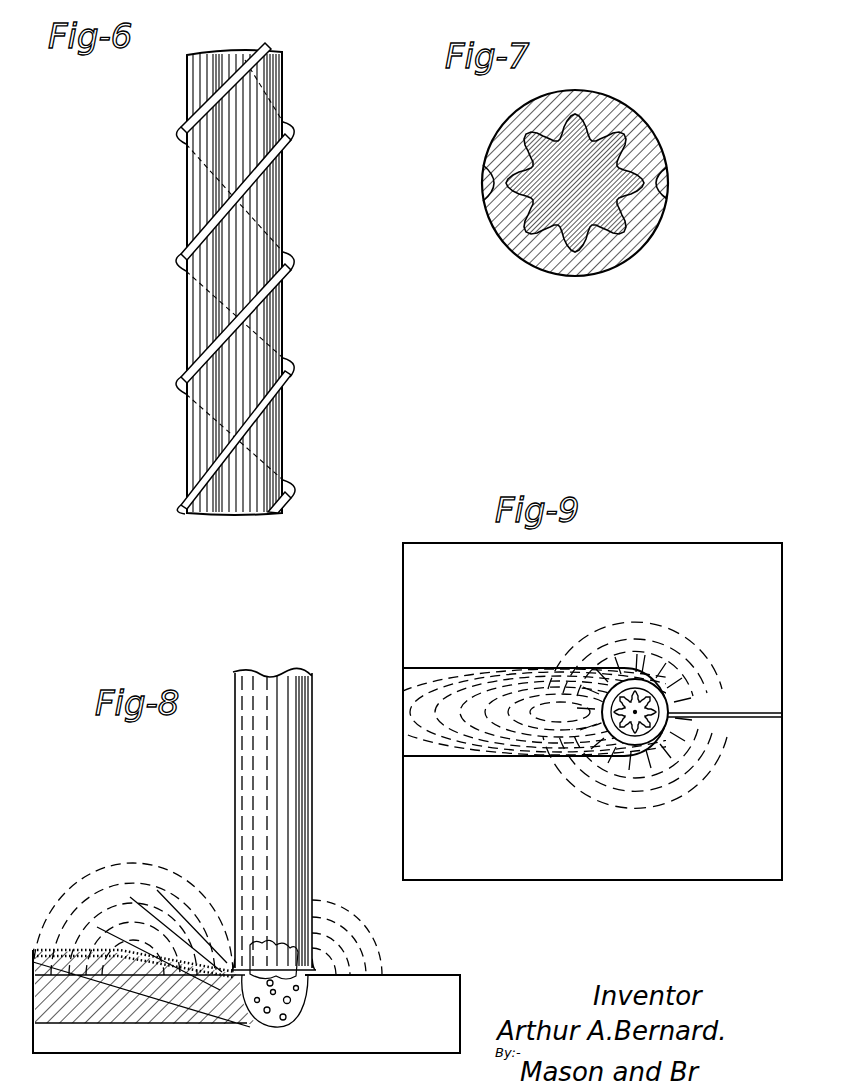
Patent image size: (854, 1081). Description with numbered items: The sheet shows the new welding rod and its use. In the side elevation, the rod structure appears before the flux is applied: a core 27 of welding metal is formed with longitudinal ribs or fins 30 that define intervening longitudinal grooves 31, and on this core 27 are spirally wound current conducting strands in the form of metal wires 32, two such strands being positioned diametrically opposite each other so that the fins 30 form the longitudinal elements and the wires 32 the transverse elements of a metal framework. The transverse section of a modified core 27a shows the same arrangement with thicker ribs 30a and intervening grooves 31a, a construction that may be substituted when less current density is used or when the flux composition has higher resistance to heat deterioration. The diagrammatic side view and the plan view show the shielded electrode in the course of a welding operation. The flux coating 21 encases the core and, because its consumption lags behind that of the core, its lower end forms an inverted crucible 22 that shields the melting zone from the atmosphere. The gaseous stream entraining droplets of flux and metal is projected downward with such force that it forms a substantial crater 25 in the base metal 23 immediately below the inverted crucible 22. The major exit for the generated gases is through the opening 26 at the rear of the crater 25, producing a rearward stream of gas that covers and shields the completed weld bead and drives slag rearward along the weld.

In FIG. 8, the flux coating 21 is at (267, 823).
In FIG. 9, the flux coating 21 is at (687, 703).
In FIG. 8, the inverted crucible 22 is at (278, 954).
In FIG. 8, the base metal 23 is at (246, 1000).
In FIG. 9, the base metal 23 is at (714, 530).
In FIG. 8, the crater 25 is at (292, 1005).
In FIG. 8, the opening 26 is at (186, 966).
In FIG. 9, the opening 26 is at (604, 714).
In FIG. 6, the core 27 is at (236, 279).
In FIG. 9, the core 27 is at (643, 711).
In FIG. 7, the modified electrode core 27a is at (584, 179).
In FIG. 6, the longitudinal ribs or fins 30 is at (240, 106).
In FIG. 8, the longitudinal ribs or fins 30 is at (266, 761).
In FIG. 9, the longitudinal ribs or fins 30 is at (657, 742).
In FIG. 7, the longitudinal ribs or fins of modified core 30a is at (607, 128).
In FIG. 7, the longitudinal grooves 31 is at (593, 238).
In FIG. 7, the longitudinal grooves of modified core 31a is at (491, 216).
In FIG. 6, the spiral strands or metal wires 32 is at (183, 133).